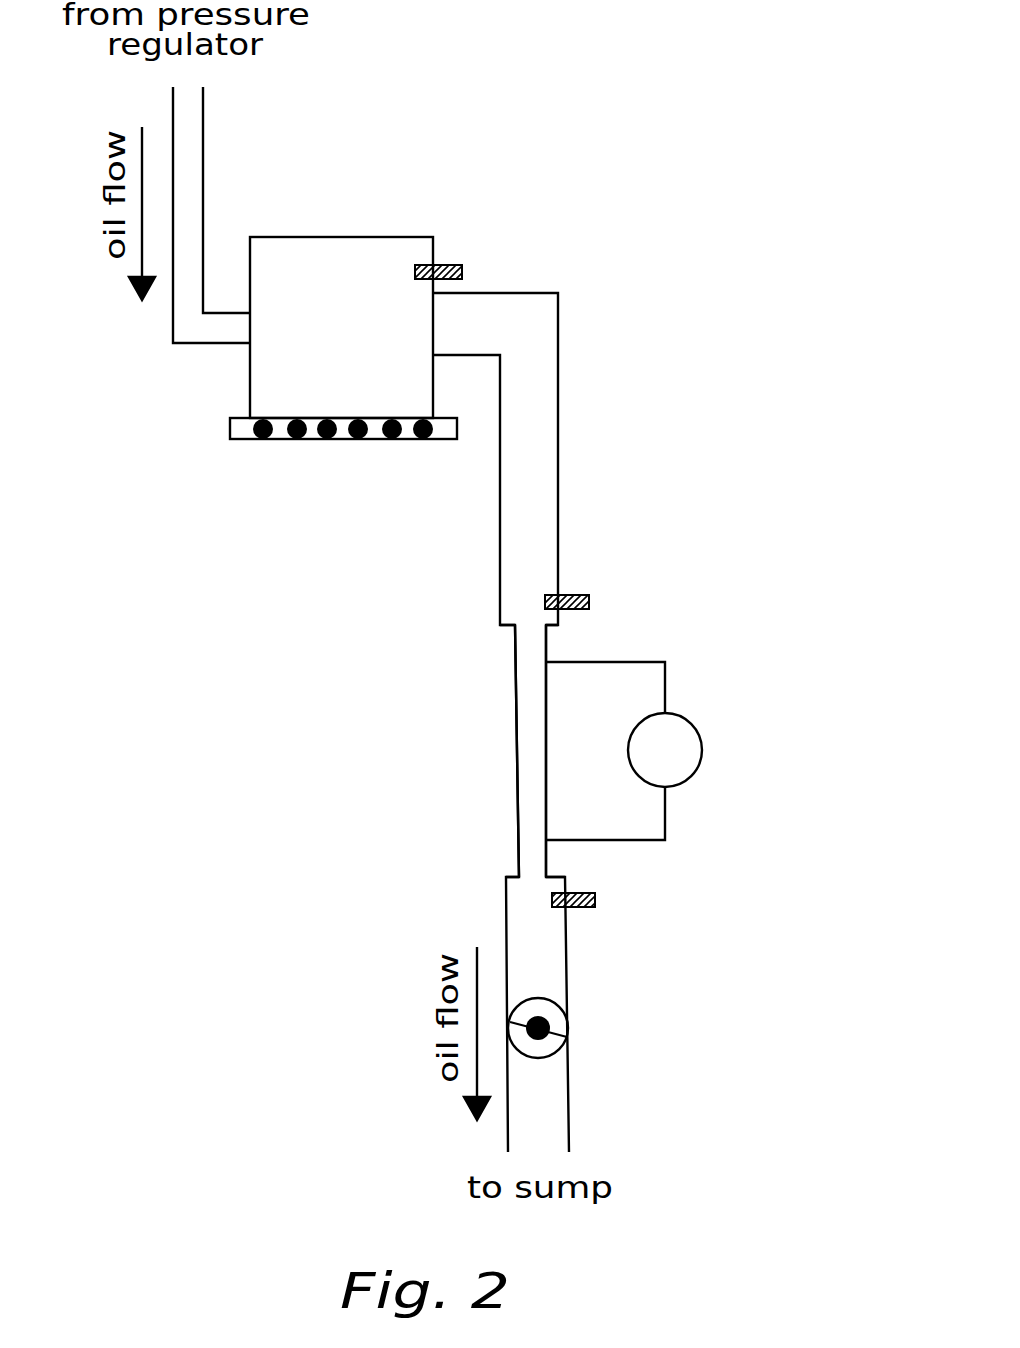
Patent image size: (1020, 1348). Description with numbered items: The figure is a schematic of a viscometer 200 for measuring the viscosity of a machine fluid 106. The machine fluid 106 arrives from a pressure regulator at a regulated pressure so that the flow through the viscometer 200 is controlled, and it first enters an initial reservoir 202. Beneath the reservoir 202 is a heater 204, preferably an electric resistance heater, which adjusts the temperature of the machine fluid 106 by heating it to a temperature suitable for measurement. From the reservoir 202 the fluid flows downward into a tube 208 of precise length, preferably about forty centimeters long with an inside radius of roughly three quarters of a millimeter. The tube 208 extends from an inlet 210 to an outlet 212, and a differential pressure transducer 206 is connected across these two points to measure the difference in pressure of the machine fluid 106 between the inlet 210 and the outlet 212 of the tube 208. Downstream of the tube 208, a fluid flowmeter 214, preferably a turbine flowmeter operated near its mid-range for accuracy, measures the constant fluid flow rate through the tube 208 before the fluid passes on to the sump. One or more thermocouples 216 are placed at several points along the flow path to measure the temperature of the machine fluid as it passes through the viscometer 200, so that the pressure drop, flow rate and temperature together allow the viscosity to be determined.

The machine fluid 106 is at (203, 160).
The viscometer 200 is at (667, 195).
The initial reservoir 202 is at (345, 237).
The heater 204 is at (230, 435).
The differential pressure transducer 206 is at (692, 710).
The tube 208 is at (517, 760).
The inlet 210 is at (515, 627).
The outlet 212 is at (518, 873).
The fluid flowmeter 214 is at (567, 1037).
The thermocouples 216 is at (460, 262).